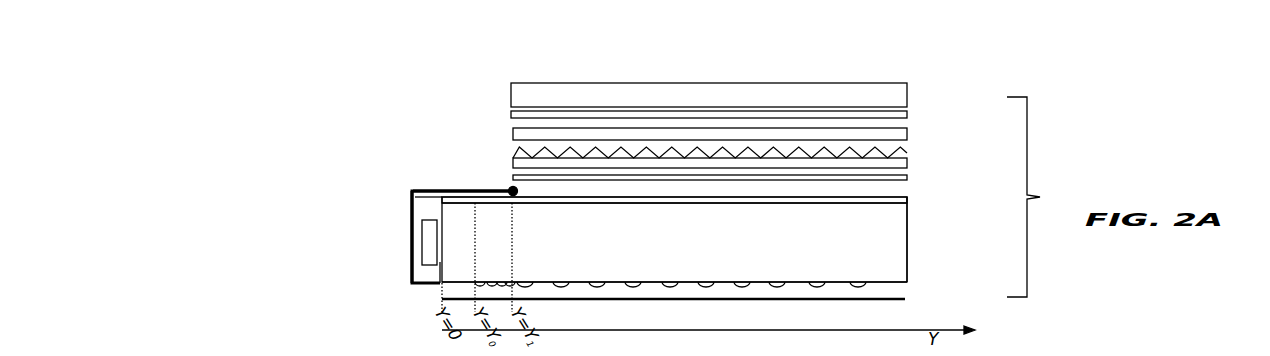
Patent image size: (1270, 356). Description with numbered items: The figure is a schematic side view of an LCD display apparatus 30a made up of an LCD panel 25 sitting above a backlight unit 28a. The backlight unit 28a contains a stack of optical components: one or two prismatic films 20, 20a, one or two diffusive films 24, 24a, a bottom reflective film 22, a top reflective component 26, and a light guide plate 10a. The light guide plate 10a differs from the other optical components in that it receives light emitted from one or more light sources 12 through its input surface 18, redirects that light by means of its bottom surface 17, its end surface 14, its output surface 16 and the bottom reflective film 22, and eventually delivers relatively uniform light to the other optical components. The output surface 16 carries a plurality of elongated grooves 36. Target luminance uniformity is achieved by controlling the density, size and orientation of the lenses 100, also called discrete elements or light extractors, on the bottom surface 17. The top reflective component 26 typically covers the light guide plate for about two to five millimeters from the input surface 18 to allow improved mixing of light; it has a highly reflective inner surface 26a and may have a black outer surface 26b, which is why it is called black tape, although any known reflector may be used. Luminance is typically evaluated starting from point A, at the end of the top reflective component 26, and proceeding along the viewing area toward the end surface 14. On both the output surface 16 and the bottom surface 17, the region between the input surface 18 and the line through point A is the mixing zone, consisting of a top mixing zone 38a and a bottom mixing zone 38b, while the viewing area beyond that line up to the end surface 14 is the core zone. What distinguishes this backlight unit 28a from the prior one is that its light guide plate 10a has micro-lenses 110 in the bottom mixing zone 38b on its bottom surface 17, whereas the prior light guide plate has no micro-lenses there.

The LCD display apparatus 30a is at (416, 77).
The LCD panel 25 is at (762, 86).
The diffusive film 24a is at (907, 114).
The prismatic film 20a is at (907, 134).
The prismatic film 20 is at (907, 158).
The diffusive film 24 is at (907, 178).
The elongated grooves 36 is at (907, 198).
The output surface 16 is at (907, 205).
The light guide plate 10a is at (674, 239).
The end surface 14 is at (907, 230).
The bottom surface 17 is at (880, 283).
The lenses 100 is at (817, 288).
The micro-lenses 110 is at (505, 287).
The bottom reflective film 22 is at (680, 302).
The top mixing zone 38a is at (470, 204).
The bottom mixing zone 38b is at (475, 281).
The input surface 18 is at (441, 262).
The light source 12 is at (428, 239).
The inner surface 26a is at (420, 196).
The outer surface 26b is at (448, 189).
The top reflective component 26 is at (505, 189).
The backlight unit 28a is at (1041, 197).